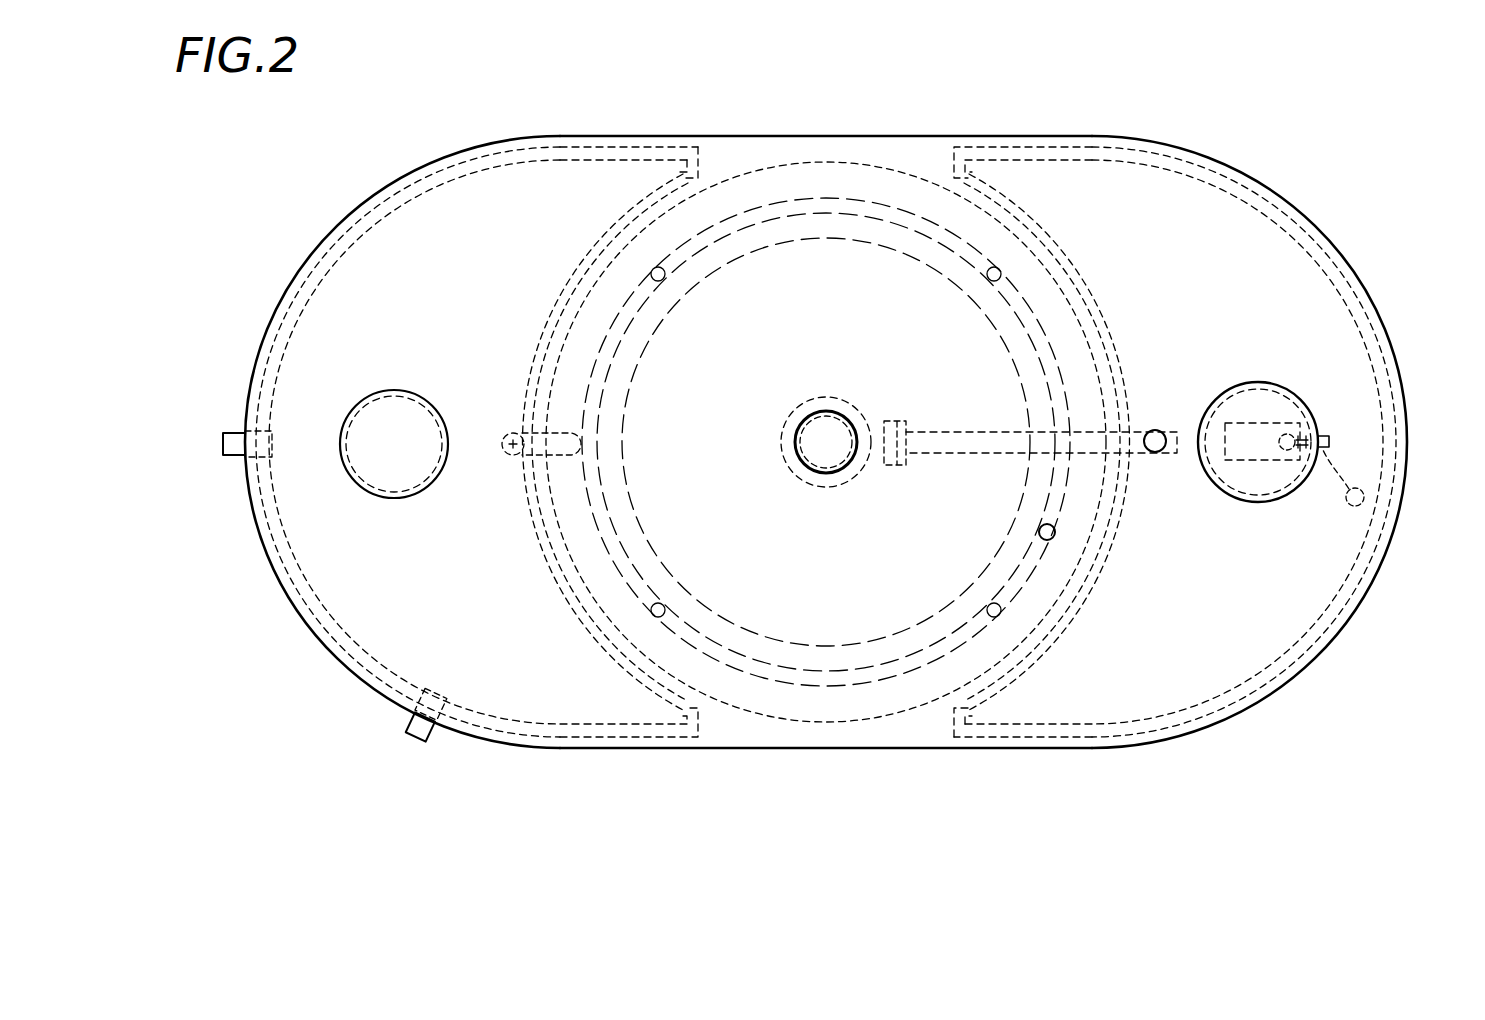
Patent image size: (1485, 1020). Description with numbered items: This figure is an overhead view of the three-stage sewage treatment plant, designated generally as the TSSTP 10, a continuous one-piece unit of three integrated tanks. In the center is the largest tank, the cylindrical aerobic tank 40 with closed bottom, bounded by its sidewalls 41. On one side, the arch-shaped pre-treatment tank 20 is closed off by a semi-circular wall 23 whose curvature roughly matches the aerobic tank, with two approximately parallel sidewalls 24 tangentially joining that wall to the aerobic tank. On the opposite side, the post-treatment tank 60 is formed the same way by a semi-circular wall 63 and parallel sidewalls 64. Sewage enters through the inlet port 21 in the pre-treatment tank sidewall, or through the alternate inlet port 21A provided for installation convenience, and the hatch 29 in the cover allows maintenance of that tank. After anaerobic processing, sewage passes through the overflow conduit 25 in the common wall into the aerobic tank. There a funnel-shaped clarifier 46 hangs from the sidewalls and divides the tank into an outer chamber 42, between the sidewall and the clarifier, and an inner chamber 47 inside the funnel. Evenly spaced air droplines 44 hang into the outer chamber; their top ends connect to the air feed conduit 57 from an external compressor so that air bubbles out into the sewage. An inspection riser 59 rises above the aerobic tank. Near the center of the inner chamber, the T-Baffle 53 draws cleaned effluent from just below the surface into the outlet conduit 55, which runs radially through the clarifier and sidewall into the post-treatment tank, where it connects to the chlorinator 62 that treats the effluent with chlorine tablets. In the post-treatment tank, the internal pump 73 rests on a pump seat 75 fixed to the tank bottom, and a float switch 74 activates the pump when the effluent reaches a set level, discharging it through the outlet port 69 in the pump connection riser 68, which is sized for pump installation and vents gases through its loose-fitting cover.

The TSSTP 10 is at (826, 516).
The pre-treatment tank 20 is at (488, 651).
The inlet port 21 is at (232, 434).
The alternate inlet port 21A is at (420, 738).
The semi-circular wall 23 is at (358, 206).
The sidewalls 24 is at (590, 134).
The overflow conduit 25 is at (510, 434).
The hatch 29 is at (385, 410).
The aerobic tank 40 is at (788, 595).
The sidewalls 41 is at (676, 178).
The outer chamber 42 is at (570, 495).
The air droplines 44 is at (657, 268).
The clarifier 46 is at (920, 680).
The inner chamber 47 is at (838, 290).
The T-Baffle 53 is at (903, 428).
The outlet conduit 55 is at (1038, 430).
The air feed conduit 57 is at (1040, 530).
The inspection riser 59 is at (815, 420).
The post-treatment tank 60 is at (1222, 651).
The chlorinator 62 is at (1155, 430).
The semi-circular wall 63 is at (1352, 628).
The sidewalls 64 is at (1055, 134).
The pump connection riser 68 is at (1283, 395).
The outlet port 69 is at (1329, 440).
The internal pump 73 is at (1247, 498).
The float switch 74 is at (1348, 505).
The pump seat 75 is at (1222, 447).